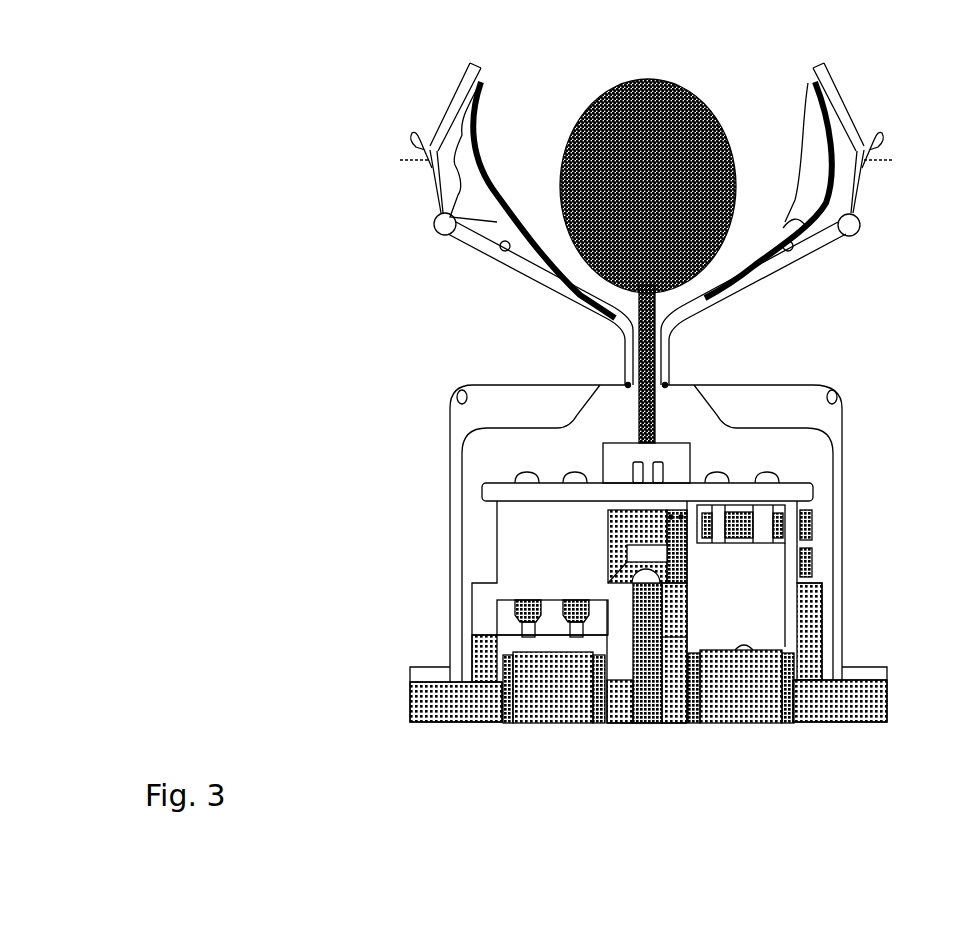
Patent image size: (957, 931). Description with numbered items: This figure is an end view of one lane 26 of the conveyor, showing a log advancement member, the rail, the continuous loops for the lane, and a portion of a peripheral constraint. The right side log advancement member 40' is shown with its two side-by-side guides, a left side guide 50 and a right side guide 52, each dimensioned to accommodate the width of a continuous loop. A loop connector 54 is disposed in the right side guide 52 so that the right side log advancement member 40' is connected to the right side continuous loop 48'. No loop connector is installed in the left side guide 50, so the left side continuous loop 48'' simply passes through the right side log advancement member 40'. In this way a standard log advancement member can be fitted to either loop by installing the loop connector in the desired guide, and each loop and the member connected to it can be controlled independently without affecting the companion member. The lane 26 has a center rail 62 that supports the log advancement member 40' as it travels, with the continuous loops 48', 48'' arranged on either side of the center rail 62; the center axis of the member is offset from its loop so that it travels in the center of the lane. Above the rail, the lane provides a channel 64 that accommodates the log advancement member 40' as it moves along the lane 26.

The lane 26 is at (650, 713).
The right side log advancement member 40' is at (710, 281).
The right side continuous loop 48' is at (741, 706).
The left side continuous loop 48'' is at (554, 712).
The left side guide 50 is at (553, 627).
The right side guide 52 is at (742, 630).
The loop connector 54 is at (732, 575).
The center rail 62 is at (657, 557).
The channel 64 is at (628, 385).